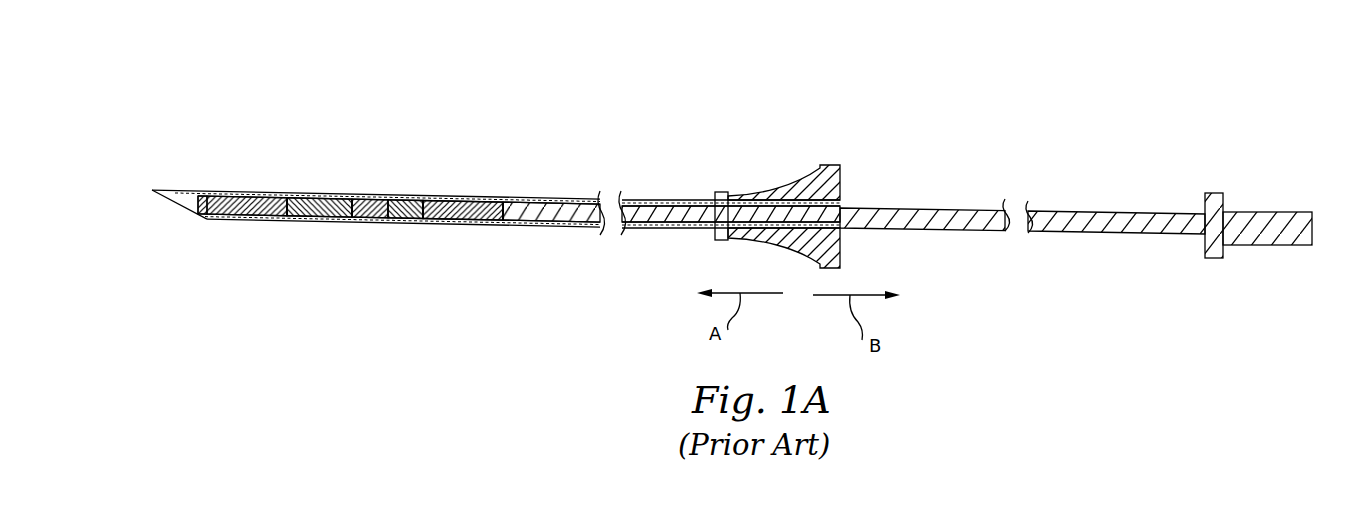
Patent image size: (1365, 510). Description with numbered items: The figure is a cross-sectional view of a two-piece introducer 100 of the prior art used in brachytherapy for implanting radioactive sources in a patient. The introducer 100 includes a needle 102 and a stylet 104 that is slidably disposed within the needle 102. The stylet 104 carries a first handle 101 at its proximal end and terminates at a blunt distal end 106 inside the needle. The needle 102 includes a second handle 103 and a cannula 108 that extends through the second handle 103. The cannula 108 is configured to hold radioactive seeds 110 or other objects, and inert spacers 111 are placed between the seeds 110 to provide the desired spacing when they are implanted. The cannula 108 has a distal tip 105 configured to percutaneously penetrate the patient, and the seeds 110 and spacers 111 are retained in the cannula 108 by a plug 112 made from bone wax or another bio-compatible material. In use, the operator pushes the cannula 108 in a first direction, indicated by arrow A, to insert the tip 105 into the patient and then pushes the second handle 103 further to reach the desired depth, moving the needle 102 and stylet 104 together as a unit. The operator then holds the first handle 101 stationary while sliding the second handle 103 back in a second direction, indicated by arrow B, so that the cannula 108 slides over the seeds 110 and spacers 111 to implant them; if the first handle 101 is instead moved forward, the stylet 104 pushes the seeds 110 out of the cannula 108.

The introducer 100 is at (605, 72).
The first handle 101 is at (1288, 212).
The needle 102 is at (527, 180).
The second handle 103 is at (782, 190).
The stylet 104 is at (1062, 188).
The distal tip 105 is at (175, 193).
The blunt distal end 106 is at (500, 223).
The cannula 108 is at (392, 194).
The radioactive seeds 110 is at (243, 219).
The inert spacers 111 is at (325, 219).
The plug 112 is at (196, 208).